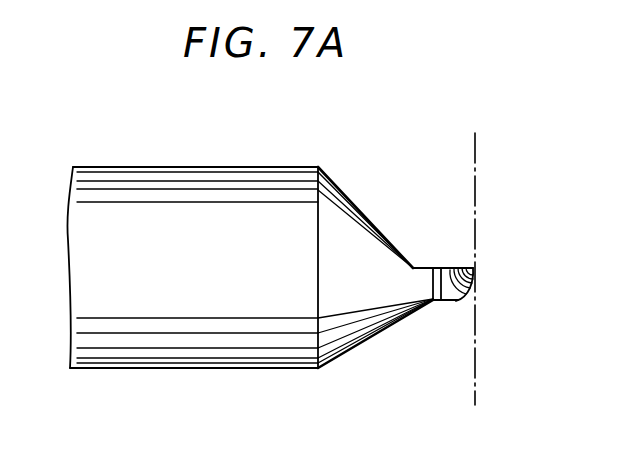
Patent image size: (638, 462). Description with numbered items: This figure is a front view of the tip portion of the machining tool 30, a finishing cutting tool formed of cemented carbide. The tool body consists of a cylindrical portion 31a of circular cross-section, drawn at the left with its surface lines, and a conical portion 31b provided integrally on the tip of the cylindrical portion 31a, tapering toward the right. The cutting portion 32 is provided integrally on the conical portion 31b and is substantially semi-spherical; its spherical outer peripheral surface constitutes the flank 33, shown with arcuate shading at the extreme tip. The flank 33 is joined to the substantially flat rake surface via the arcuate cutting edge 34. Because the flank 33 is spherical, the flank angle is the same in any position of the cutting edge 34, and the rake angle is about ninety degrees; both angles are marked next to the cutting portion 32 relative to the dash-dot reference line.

The machining tool 30 is at (224, 196).
The cylindrical portion 31a is at (210, 340).
The conical portion 31b is at (353, 325).
The cutting portion 32 is at (492, 271).
The flank 33 is at (468, 280).
The cutting edge 34 is at (445, 301).